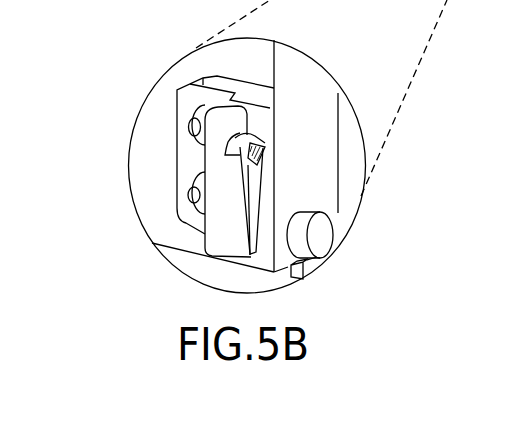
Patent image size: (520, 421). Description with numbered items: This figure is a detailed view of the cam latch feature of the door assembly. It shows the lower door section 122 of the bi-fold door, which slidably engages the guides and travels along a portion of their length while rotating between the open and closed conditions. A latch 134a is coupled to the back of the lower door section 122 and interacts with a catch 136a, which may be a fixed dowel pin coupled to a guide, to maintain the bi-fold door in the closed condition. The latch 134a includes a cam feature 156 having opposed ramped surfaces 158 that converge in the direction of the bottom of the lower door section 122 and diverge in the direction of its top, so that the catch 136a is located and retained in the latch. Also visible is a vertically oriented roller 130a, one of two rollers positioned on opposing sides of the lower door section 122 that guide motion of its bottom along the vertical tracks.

The lower door section 122 is at (322, 187).
The latch 134a is at (189, 161).
The ramped surfaces 158 is at (223, 217).
The cam feature 156 is at (249, 132).
The catch 136a is at (266, 146).
The roller 130a is at (320, 242).